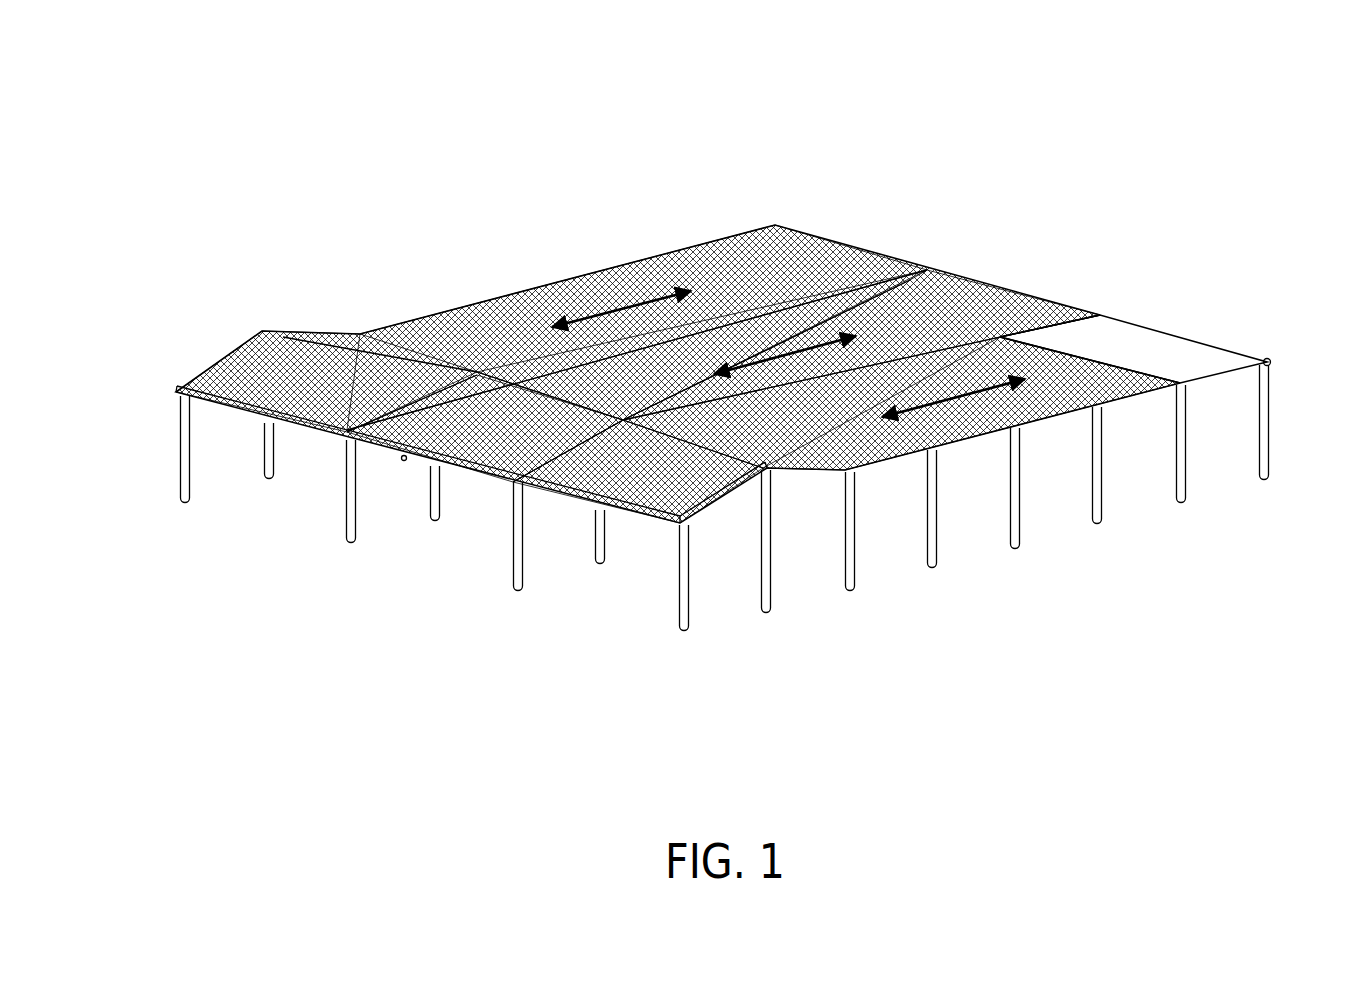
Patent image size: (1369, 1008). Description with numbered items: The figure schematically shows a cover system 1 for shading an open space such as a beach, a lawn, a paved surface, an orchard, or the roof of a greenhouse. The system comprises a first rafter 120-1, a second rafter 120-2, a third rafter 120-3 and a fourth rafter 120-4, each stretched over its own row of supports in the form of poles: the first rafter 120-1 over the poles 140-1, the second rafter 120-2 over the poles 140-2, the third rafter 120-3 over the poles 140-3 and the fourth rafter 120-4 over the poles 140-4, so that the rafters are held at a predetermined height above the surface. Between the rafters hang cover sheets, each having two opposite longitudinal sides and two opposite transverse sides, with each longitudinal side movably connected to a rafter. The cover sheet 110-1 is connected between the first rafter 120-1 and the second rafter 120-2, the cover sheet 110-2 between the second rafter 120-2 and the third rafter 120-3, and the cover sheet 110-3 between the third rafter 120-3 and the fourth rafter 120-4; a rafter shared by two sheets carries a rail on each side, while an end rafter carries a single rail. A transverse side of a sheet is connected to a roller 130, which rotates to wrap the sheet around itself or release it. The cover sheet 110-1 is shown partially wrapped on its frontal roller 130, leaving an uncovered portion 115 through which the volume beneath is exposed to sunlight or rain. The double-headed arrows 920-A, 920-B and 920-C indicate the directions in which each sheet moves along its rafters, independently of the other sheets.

The cover system 1 is at (280, 150).
The cover sheet 110-1 is at (627, 468).
The cover sheet 110-2 is at (478, 405).
The cover sheet 110-3 is at (272, 378).
The uncovered portion 115 is at (1138, 355).
The first rafter 120-1 is at (1211, 372).
The second rafter 120-2 is at (1061, 318).
The third rafter 120-3 is at (890, 280).
The fourth rafter 120-4 is at (526, 285).
The roller 130 is at (1268, 362).
The supports 140-1 is at (694, 600).
The supports 140-2 is at (515, 566).
The supports 140-3 is at (349, 522).
The supports 140-4 is at (180, 484).
The double-headed arrow 920-A is at (951, 395).
The double-headed arrow 920-B is at (790, 352).
The double-headed arrow 920-C is at (630, 302).